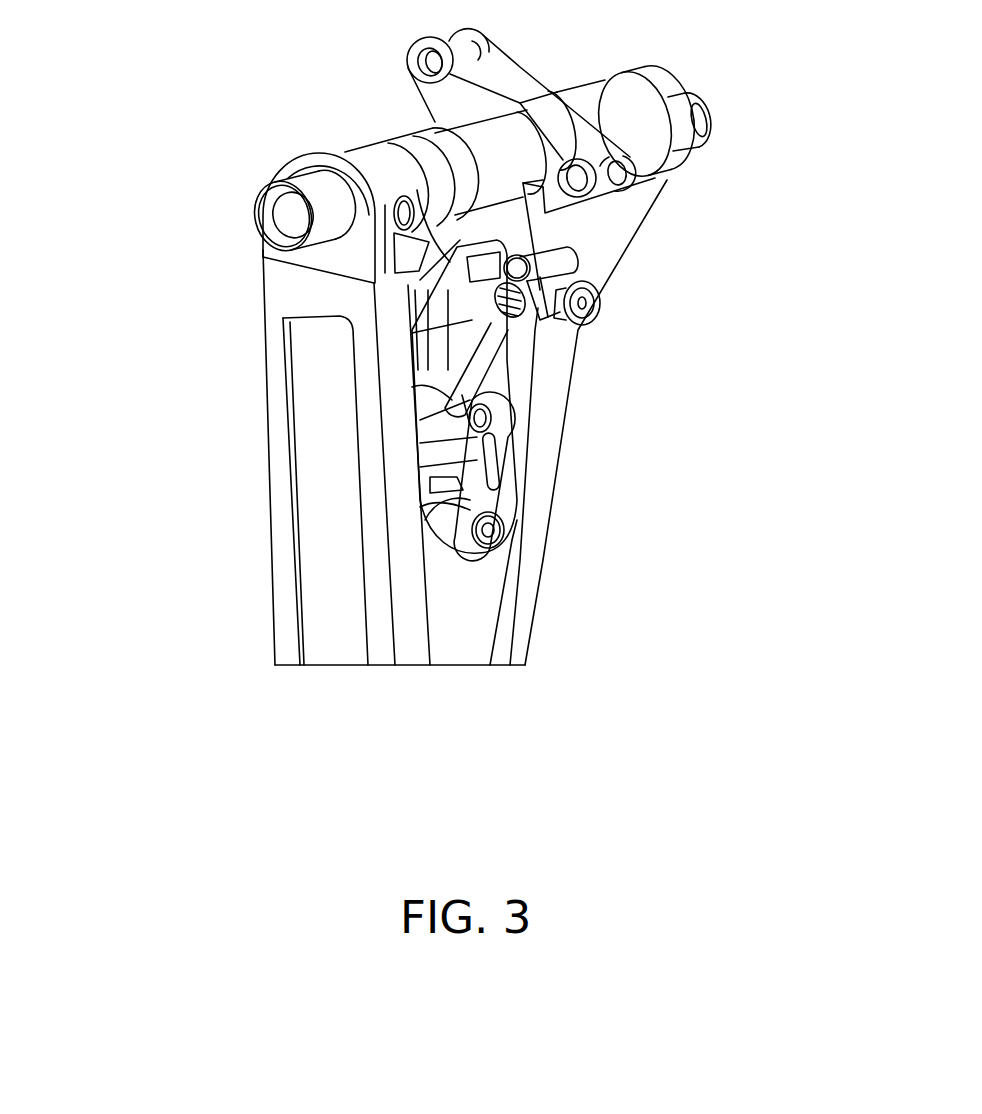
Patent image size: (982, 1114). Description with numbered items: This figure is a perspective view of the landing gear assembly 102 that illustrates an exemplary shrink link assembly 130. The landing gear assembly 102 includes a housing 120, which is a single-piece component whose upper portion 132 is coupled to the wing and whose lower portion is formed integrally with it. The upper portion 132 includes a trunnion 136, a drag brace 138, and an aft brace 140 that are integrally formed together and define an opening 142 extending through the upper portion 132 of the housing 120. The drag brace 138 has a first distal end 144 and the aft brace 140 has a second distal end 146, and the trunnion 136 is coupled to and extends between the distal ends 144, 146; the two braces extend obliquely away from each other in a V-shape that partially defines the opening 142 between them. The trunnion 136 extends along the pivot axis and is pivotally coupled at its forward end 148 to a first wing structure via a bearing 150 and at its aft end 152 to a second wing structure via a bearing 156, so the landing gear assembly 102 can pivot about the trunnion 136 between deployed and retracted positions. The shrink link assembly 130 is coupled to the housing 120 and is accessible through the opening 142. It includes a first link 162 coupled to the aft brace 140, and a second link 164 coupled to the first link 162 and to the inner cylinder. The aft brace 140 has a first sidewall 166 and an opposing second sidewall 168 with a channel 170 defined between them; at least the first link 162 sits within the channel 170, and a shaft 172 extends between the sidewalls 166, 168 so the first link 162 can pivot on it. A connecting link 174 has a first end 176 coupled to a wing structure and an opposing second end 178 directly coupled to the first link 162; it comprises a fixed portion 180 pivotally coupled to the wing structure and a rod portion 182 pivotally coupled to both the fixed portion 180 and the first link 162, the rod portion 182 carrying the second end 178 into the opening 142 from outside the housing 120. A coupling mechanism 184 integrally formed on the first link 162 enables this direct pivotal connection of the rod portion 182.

The landing gear assembly 102 is at (133, 90).
The housing 120 is at (280, 587).
The shrink link assembly 130 is at (525, 473).
The upper portion 132 is at (762, 352).
The trunnion 136 is at (440, 138).
The drag brace 138 is at (280, 462).
The aft brace 140 is at (537, 533).
The opening 142 is at (403, 314).
The first distal end 144 is at (282, 282).
The second distal end 146 is at (640, 200).
The forward end 148 is at (327, 153).
The bearing 150 is at (287, 180).
The aft end 152 is at (650, 80).
The bearing 156 is at (703, 102).
The first link 162 is at (512, 527).
The second link 164 is at (443, 530).
The first sidewall 166 is at (501, 392).
The second sidewall 168 is at (432, 332).
The channel 170 is at (522, 573).
The shaft 172 is at (600, 318).
The connecting link 174 is at (448, 364).
The first end 176 is at (562, 286).
The second end 178 is at (505, 408).
The fixed portion 180 is at (580, 247).
The rod portion 182 is at (520, 388).
The coupling mechanism 184 is at (527, 461).